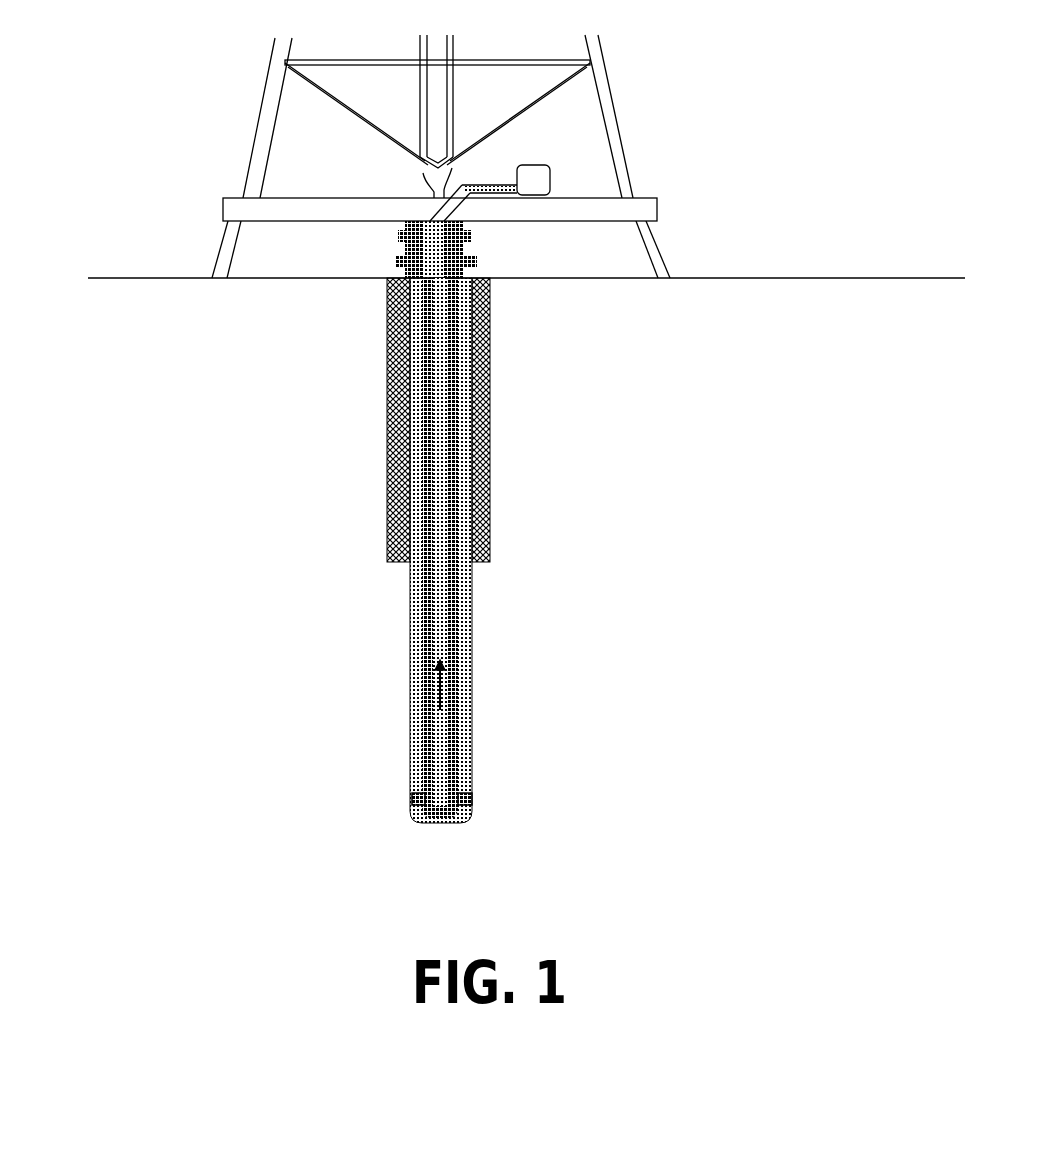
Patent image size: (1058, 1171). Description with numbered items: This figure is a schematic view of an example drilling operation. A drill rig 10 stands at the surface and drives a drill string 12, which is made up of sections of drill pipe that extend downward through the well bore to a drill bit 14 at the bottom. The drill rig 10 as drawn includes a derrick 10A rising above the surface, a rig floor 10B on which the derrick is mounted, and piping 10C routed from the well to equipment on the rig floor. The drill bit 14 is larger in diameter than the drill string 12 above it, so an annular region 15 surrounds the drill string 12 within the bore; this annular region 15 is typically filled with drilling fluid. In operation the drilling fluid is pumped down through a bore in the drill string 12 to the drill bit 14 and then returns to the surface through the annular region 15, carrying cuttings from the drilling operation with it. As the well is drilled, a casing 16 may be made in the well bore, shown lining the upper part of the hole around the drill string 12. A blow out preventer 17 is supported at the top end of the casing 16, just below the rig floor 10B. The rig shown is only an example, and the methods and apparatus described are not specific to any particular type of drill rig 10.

The drill rig 10 is at (118, 82).
The derrick 10A is at (607, 86).
The rig floor 10B is at (293, 200).
The flow line / pipe 10C is at (427, 173).
The drill string 12 is at (422, 635).
The drill bit 14 is at (417, 820).
The annular region 15 is at (417, 565).
The casing 16 is at (405, 448).
The blow out preventer 17 is at (400, 237).